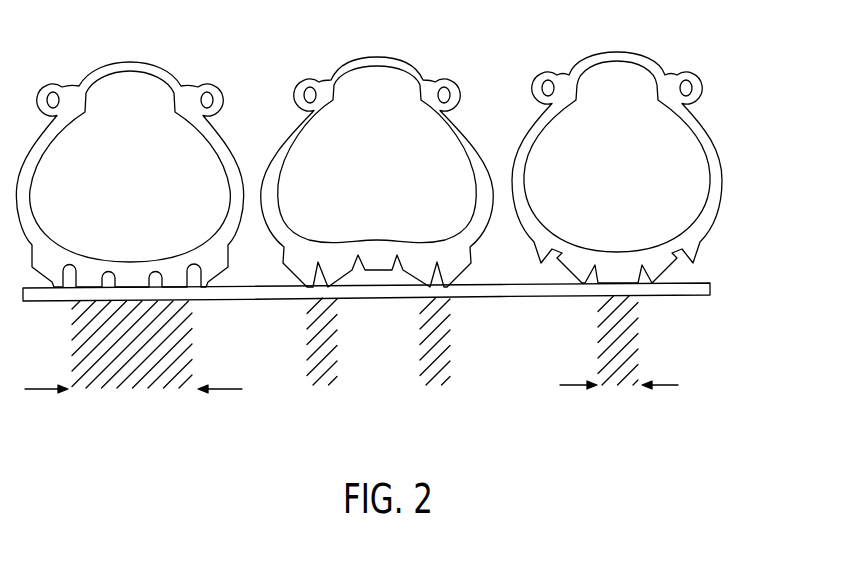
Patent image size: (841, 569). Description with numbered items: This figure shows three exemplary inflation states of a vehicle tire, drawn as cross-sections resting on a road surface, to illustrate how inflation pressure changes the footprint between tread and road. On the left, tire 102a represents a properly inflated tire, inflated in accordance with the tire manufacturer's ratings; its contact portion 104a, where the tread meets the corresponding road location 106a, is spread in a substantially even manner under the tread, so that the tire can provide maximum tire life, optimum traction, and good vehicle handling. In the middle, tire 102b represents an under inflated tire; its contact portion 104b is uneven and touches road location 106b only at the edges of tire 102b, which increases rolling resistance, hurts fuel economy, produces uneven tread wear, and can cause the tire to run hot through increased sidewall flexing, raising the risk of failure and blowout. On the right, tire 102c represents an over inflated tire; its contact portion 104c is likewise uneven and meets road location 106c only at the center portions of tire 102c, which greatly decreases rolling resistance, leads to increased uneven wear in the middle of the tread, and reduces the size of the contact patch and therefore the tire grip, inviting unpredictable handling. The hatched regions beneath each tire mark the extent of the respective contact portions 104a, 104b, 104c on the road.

The properly inflated tire 102a is at (216, 132).
The under inflated tire 102b is at (466, 133).
The over inflated tire 102c is at (706, 130).
The contact portion 104a is at (92, 396).
The contact portion 104b is at (435, 394).
The contact portion 104c is at (615, 392).
The road location 106a is at (48, 305).
The road location 106b is at (285, 303).
The road location 106c is at (572, 300).